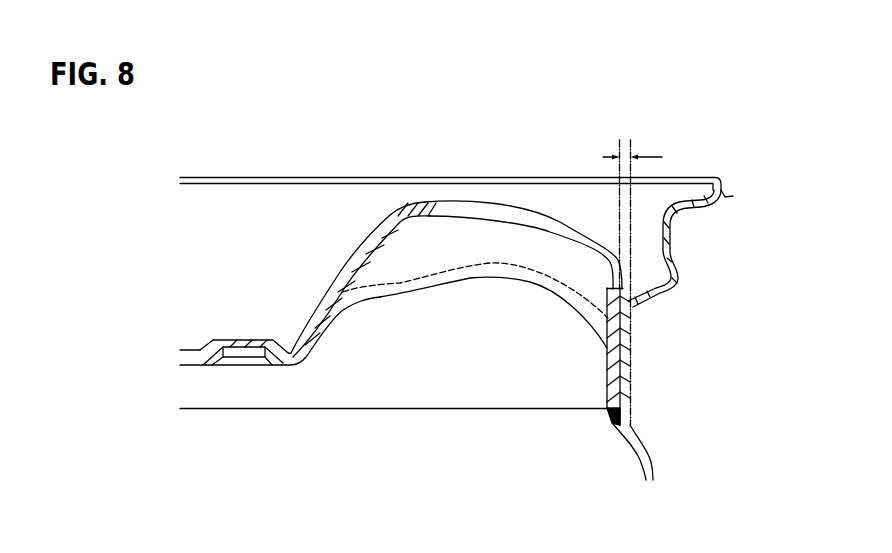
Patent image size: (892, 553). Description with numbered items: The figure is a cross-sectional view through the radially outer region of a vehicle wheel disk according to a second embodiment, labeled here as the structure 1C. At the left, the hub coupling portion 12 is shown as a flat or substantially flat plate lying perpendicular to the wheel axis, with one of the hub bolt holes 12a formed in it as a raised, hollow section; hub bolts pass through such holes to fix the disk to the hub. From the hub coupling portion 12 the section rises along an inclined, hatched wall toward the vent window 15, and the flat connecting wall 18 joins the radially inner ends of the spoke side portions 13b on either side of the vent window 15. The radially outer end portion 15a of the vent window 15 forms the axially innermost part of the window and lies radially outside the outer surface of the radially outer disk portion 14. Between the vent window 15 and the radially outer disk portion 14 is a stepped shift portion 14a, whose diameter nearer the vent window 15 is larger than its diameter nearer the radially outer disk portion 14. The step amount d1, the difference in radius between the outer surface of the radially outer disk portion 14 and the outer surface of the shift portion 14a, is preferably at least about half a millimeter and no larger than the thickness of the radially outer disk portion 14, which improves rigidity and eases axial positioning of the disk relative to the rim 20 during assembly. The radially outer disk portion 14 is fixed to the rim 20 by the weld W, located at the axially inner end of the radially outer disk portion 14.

The vehicle body rear side structure 1C is at (357, 229).
The hub coupling portion 12 is at (192, 356).
The hub bolt hole 12a is at (239, 339).
The spoke side portion 13b is at (466, 247).
The radially outer disk portion 14 is at (617, 382).
The shift portion 14a is at (608, 314).
The vent window 15 is at (567, 220).
The radially outer end portion of the vent window 15a is at (630, 282).
The connecting wall 18 is at (337, 276).
The rim 20 is at (742, 190).
The step amount d1 is at (634, 219).
The weld W is at (608, 423).